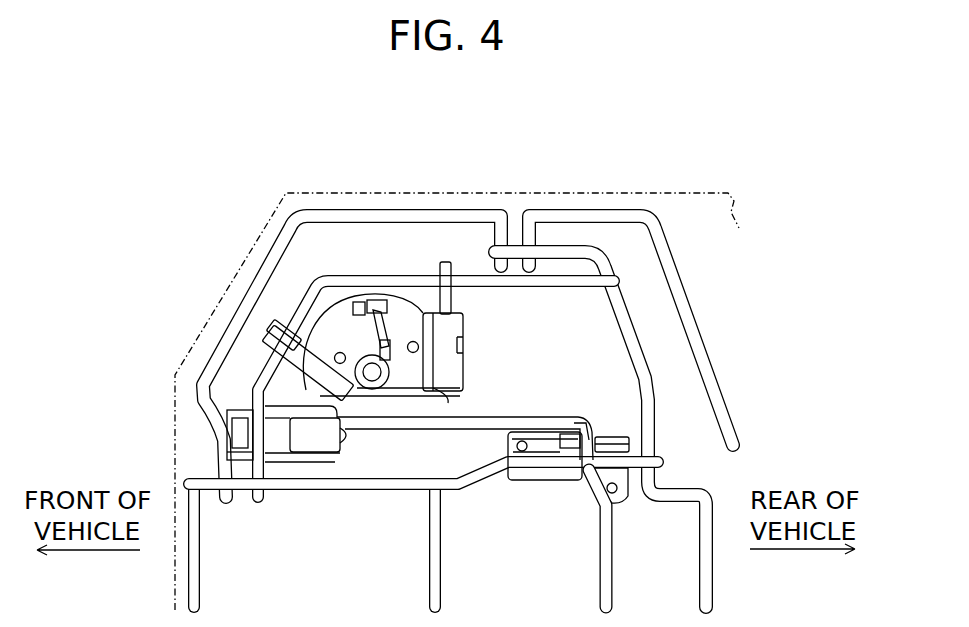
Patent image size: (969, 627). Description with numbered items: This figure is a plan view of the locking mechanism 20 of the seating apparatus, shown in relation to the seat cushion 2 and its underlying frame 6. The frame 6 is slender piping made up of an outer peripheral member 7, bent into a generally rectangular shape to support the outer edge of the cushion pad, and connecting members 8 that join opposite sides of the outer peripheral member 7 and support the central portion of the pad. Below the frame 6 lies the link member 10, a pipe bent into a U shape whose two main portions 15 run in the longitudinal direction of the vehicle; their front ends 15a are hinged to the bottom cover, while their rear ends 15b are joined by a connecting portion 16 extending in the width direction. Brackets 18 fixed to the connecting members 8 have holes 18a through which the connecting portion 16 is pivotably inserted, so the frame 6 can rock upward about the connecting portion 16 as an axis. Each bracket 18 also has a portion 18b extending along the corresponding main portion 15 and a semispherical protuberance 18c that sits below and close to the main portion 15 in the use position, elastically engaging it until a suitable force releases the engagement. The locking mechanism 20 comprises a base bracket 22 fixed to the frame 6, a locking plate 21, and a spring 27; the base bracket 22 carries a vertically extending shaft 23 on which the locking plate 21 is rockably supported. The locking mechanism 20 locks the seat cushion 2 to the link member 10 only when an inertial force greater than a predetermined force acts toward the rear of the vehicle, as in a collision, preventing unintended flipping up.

The seat cushion 2 is at (318, 192).
The frame 6 is at (467, 206).
The outer peripheral member 7 is at (592, 206).
The connecting members 8 is at (419, 256).
The link member 10 is at (557, 414).
The main portions 15 is at (501, 416).
The front ends 15a is at (197, 366).
The rear ends 15b is at (585, 414).
The connecting portion 16 is at (613, 552).
The brackets 18 is at (561, 483).
The holes 18a is at (598, 437).
The portion 18b is at (540, 455).
The semispherical protuberance 18c is at (560, 436).
The locking mechanism 20 is at (382, 280).
The locking plate 21 is at (410, 405).
The base bracket 22 is at (490, 405).
The shaft 23 is at (367, 398).
The spring 27 is at (373, 298).